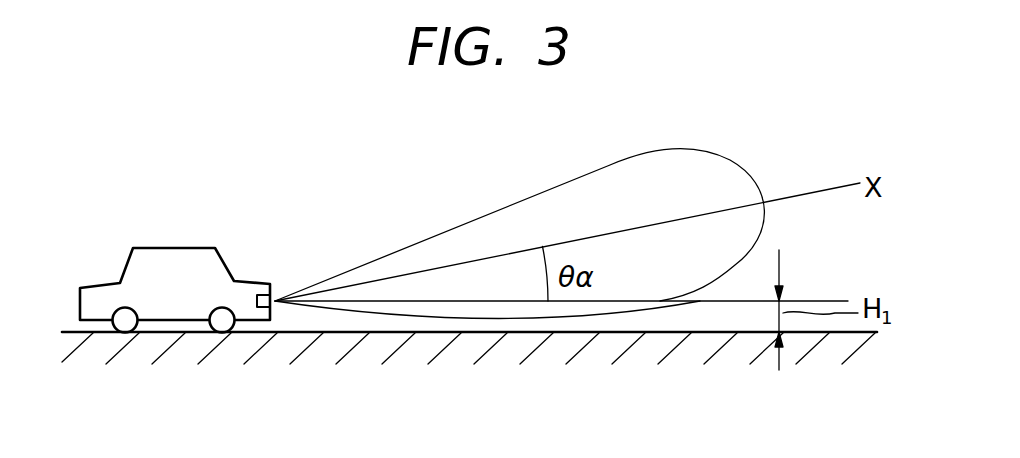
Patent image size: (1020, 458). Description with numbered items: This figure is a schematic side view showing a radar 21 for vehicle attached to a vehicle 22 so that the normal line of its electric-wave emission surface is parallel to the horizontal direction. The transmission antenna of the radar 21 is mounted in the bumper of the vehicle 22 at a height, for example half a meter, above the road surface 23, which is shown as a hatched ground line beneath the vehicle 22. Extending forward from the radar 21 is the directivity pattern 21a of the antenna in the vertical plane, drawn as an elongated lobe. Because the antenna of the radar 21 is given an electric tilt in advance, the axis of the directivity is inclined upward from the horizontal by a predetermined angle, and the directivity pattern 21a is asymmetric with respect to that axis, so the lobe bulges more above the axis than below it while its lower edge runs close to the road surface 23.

The radar for vehicle 21 is at (265, 294).
The directivity pattern 21a is at (543, 202).
The vehicle 22 is at (160, 263).
The road surface 23 is at (150, 334).